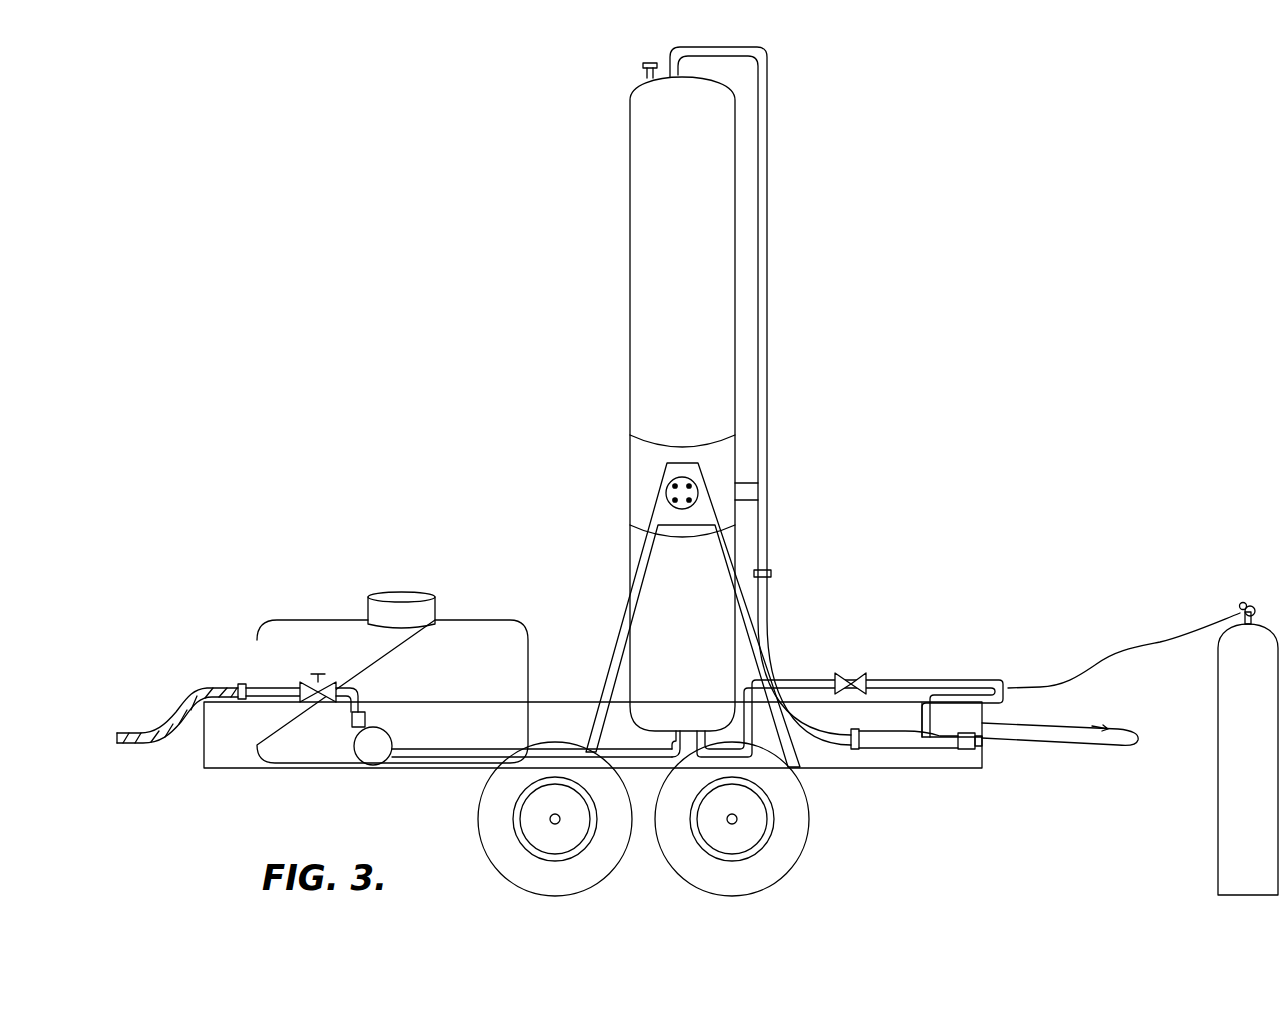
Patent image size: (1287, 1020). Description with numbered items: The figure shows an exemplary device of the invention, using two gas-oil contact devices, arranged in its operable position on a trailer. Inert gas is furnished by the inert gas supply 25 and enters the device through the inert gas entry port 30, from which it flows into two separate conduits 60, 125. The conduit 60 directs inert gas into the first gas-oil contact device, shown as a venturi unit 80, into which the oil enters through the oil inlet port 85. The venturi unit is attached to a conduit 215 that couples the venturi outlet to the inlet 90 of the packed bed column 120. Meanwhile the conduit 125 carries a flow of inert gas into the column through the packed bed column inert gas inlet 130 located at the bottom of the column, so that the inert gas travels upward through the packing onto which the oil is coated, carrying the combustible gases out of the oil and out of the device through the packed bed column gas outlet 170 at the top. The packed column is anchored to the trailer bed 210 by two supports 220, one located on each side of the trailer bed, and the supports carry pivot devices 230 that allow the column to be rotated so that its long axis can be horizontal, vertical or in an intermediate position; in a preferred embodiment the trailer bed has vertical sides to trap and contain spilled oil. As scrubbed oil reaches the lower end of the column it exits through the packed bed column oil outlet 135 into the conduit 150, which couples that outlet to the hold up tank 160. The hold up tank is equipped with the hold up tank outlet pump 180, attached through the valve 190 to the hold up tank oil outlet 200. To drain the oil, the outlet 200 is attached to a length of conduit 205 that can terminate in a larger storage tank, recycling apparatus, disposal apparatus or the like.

The inert gas supply 25 is at (1262, 693).
The inert gas entry port 30 is at (1008, 690).
The conduit 60 is at (928, 725).
The venturi unit 80 is at (884, 752).
The oil inlet port 85 is at (985, 757).
The inlet 90 is at (769, 132).
The packed bed column 120 is at (698, 277).
The conduit 125 is at (845, 674).
The packed bed column inert gas inlet 130 is at (699, 730).
The packed bed column oil outlet 135 is at (681, 731).
The conduit 150 is at (622, 740).
The hold up tank 160 is at (485, 675).
The packed bed column gas outlet 170 is at (642, 66).
The hold up tank outlet pump 180 is at (390, 746).
The valve 190 is at (322, 681).
The hold up tank oil outlet 200 is at (247, 665).
The conduit 205 is at (178, 700).
The trailer bed 210 is at (235, 770).
The conduit 215 is at (771, 606).
The supports 220 is at (624, 638).
The pivot devices 230 is at (666, 492).